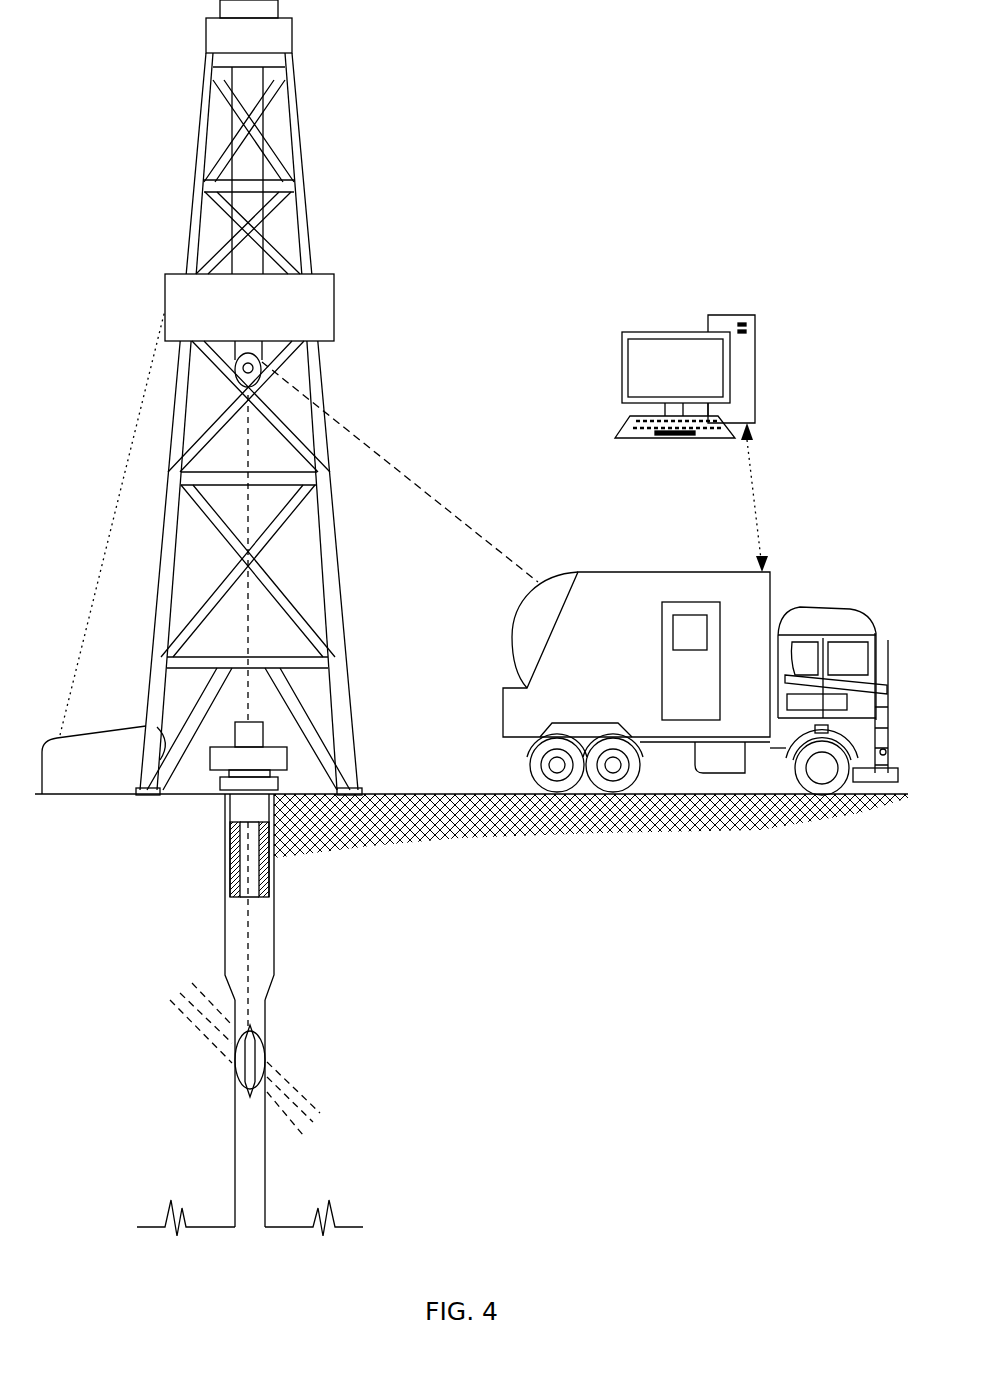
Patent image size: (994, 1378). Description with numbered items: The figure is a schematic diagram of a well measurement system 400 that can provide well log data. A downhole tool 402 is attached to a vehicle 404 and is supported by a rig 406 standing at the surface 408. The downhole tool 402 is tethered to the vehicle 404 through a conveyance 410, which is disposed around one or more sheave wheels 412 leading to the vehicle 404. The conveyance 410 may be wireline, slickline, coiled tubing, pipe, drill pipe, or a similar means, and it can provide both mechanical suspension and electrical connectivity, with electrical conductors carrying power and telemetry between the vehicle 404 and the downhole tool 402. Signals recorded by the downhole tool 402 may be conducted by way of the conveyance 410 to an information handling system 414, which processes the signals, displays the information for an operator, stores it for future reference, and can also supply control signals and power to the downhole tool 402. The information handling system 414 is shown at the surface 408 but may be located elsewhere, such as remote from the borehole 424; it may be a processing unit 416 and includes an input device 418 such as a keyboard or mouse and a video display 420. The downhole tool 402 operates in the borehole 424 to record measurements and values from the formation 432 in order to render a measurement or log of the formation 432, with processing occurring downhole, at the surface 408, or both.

The well measurement system 400 is at (652, 106).
The downhole tool 402 is at (237, 1068).
The vehicle 404 is at (660, 572).
The rig 406 is at (338, 550).
The surface 408 is at (420, 793).
The conveyance 410 is at (250, 935).
The sheave wheel 412 is at (513, 627).
The information handling system 414 is at (687, 343).
The processing unit 416 is at (755, 338).
The input device 418 is at (617, 435).
The video display 420 is at (622, 350).
The borehole 424 is at (233, 1167).
The formation 432 is at (582, 917).